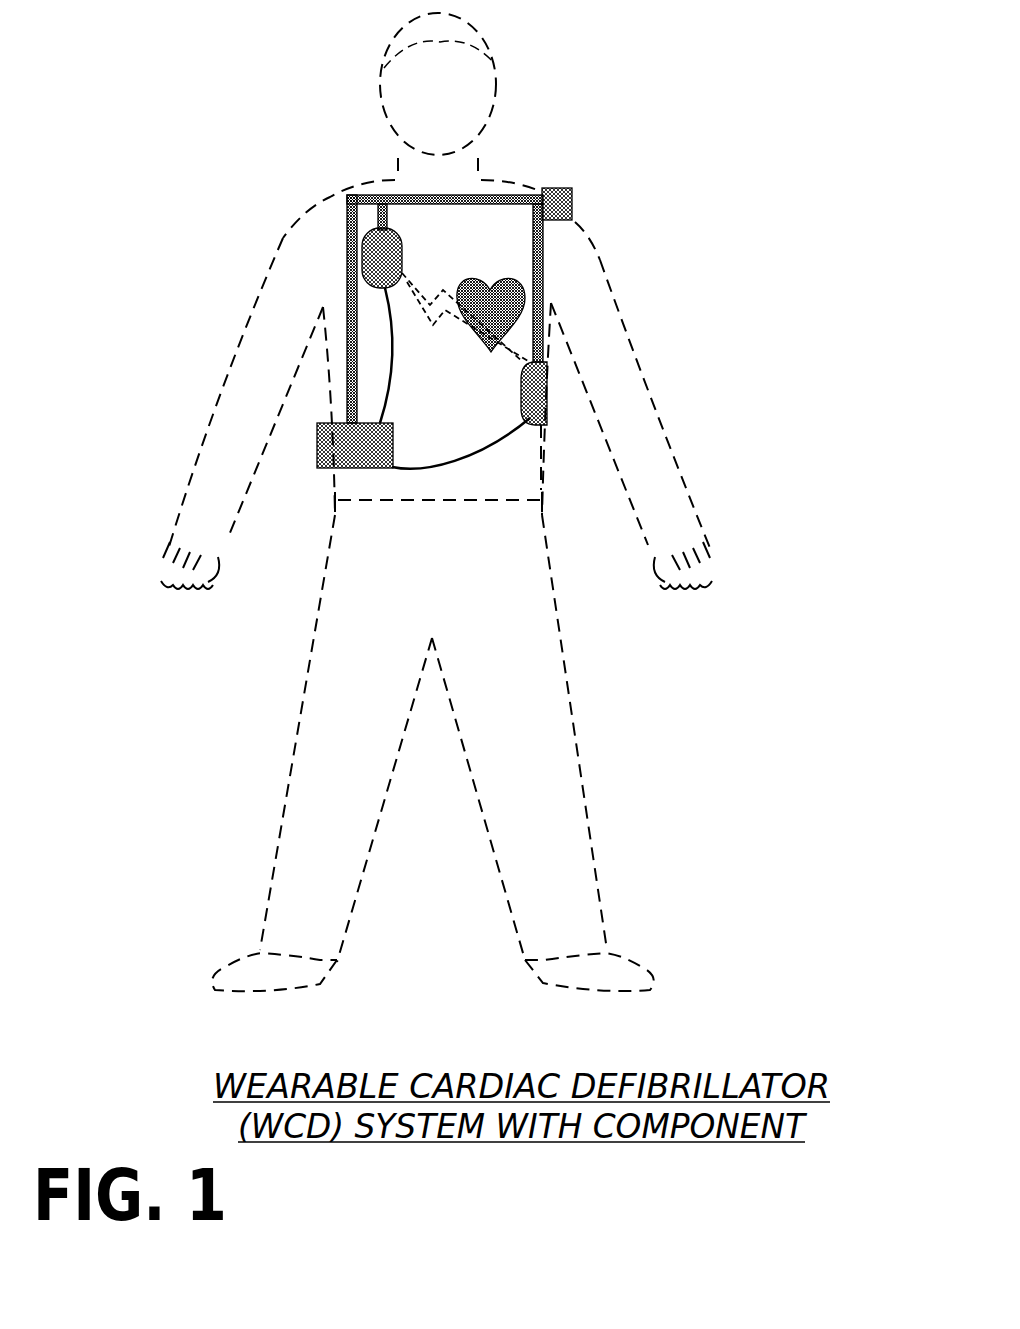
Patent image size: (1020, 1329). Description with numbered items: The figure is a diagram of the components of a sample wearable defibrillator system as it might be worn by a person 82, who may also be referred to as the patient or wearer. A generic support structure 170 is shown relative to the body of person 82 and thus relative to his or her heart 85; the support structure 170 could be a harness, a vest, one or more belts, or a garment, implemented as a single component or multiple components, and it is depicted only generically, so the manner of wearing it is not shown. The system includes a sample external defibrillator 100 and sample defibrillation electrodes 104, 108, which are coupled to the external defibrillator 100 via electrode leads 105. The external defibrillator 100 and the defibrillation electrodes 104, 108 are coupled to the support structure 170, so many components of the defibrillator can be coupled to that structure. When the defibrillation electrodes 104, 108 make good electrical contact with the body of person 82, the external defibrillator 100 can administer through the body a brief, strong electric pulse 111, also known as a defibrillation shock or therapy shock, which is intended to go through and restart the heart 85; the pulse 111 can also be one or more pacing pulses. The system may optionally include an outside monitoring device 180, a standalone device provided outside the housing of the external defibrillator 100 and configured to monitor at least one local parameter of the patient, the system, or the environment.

The person 82 is at (378, 103).
The support structure 170 is at (346, 220).
The outside monitoring device 180 is at (574, 196).
The defibrillation electrode 104 is at (404, 258).
The heart 85 is at (486, 277).
The electric pulse 111 is at (462, 338).
The electrode leads 105 is at (468, 460).
The defibrillation electrode 108 is at (550, 411).
The external defibrillator 100 is at (317, 468).